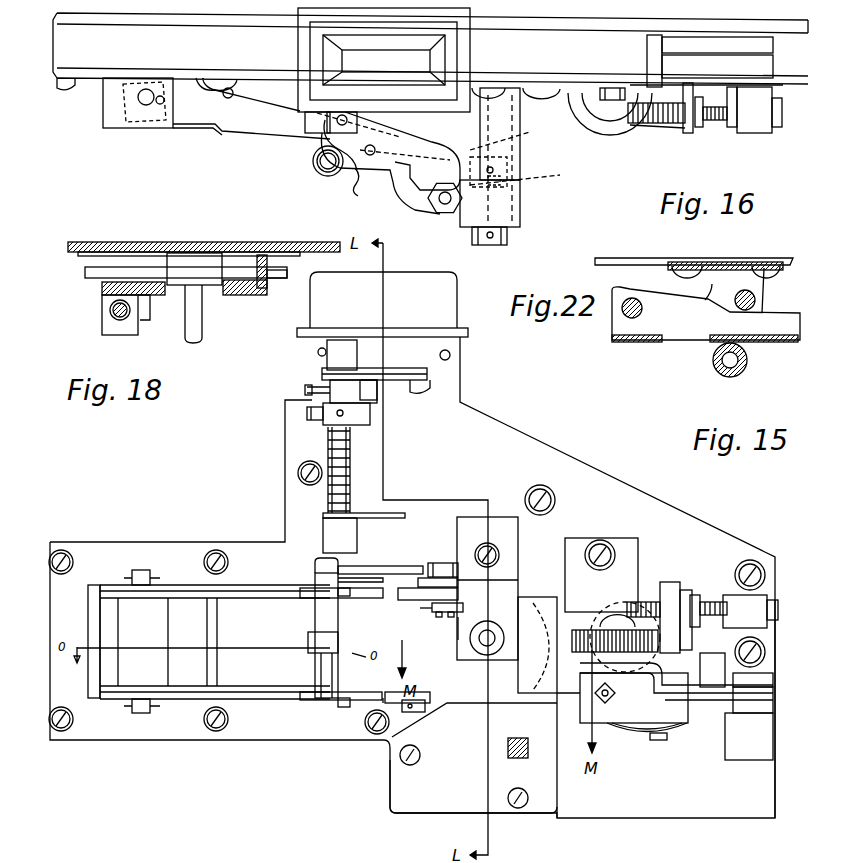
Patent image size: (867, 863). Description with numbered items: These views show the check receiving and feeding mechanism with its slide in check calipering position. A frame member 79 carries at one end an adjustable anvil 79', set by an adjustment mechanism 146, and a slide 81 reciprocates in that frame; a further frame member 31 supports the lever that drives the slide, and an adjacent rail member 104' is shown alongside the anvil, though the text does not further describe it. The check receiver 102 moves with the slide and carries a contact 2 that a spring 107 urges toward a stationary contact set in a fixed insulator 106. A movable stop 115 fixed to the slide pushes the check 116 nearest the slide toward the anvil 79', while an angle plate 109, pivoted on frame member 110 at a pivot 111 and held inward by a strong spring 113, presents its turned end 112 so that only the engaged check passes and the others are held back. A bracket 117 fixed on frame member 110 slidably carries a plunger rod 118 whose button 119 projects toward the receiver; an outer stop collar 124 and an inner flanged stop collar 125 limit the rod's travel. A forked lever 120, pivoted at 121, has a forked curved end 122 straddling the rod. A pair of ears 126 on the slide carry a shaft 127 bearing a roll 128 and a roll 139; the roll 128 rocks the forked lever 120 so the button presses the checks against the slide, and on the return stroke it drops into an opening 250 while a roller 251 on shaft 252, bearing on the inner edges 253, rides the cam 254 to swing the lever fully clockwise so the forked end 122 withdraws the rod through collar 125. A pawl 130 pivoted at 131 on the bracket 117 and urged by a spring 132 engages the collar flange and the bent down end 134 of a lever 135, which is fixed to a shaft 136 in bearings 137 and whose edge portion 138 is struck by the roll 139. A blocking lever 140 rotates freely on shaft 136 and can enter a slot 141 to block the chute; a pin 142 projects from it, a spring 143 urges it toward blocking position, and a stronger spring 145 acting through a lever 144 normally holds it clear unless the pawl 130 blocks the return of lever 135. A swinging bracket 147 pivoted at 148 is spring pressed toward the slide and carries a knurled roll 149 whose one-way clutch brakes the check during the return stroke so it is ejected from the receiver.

In FIG. 16, the frame member 31 is at (195, 24).
In FIG. 16, the frame member 110 is at (143, 69).
In FIG. 18, the frame member 110 is at (88, 271).
In FIG. 22, the frame member 110 is at (262, 740).
In FIG. 16, the rail member 104' is at (710, 61).
In FIG. 16, the adjustable anvil 79' is at (721, 74).
In FIG. 22, the adjustable anvil 79' is at (686, 604).
In FIG. 16, the pivot 121 is at (138, 103).
In FIG. 22, the pivot 121 is at (135, 713).
In FIG. 16, the opening 250 is at (200, 130).
In FIG. 15, the opening 250 is at (690, 341).
In FIG. 22, the opening 250 is at (203, 642).
In FIG. 16, the forked lever 120 is at (256, 134).
In FIG. 22, the forked lever 120 is at (258, 648).
In FIG. 16, the inner edges 253 is at (247, 95).
In FIG. 16, the cam 254 is at (229, 99).
In FIG. 15, the cam 254 is at (727, 284).
In FIG. 16, the blocking lever 140 is at (405, 118).
In FIG. 22, the blocking lever 140 is at (430, 387).
In FIG. 16, the lever 144 is at (372, 118).
In FIG. 22, the lever 144 is at (372, 418).
In FIG. 16, the roll 139 is at (313, 165).
In FIG. 22, the roll 139 is at (312, 562).
In FIG. 16, the ears 126 is at (313, 158).
In FIG. 22, the ears 126 is at (312, 588).
In FIG. 16, the bent down end 134 is at (410, 175).
In FIG. 16, the pawl 130 is at (412, 200).
In FIG. 16, the edge portion 138 is at (352, 173).
In FIG. 22, the edge portion 138 is at (365, 565).
In FIG. 16, the lever 135 is at (358, 188).
In FIG. 22, the lever 135 is at (408, 565).
In FIG. 16, the pivot 131 is at (437, 215).
In FIG. 22, the pivot 131 is at (458, 636).
In FIG. 16, the bracket 117 is at (520, 200).
In FIG. 16, the forked curved end 122 is at (518, 146).
In FIG. 16, the inner flanged stop collar 125 is at (510, 168).
In FIG. 16, the outer stop collar 124 is at (507, 240).
In FIG. 22, the outer stop collar 124 is at (500, 622).
In FIG. 16, the plunger rod 118 is at (490, 246).
In FIG. 18, the plunger rod 118 is at (203, 318).
In FIG. 22, the plunger rod 118 is at (468, 660).
In FIG. 16, the knurled roll 149 is at (610, 136).
In FIG. 22, the knurled roll 149 is at (615, 670).
In FIG. 16, the adjustment mechanism 146 is at (752, 133).
In FIG. 22, the adjustment mechanism 146 is at (772, 605).
In FIG. 18, the movable stop 115 is at (68, 252).
In FIG. 18, the slide 81 is at (245, 246).
In FIG. 18, the button 119 is at (203, 283).
In FIG. 18, the turned end 112 is at (268, 268).
In FIG. 22, the turned end 112 is at (550, 628).
In FIG. 18, the angle plate 109 is at (235, 296).
In FIG. 22, the angle plate 109 is at (500, 647).
In FIG. 18, the pivot 111 is at (102, 313).
In FIG. 22, the pivot 111 is at (418, 713).
In FIG. 18, the spring 113 is at (146, 306).
In FIG. 15, the roller 251 is at (768, 291).
In FIG. 15, the shaft 252 is at (757, 300).
In FIG. 22, the shaft 252 is at (345, 580).
In FIG. 15, the shaft 127 is at (718, 369).
In FIG. 22, the shaft 127 is at (336, 674).
In FIG. 15, the roll 128 is at (748, 371).
In FIG. 22, the roll 128 is at (340, 645).
In FIG. 22, the bearings 137 is at (358, 352).
In FIG. 22, the slot 141 is at (425, 376).
In FIG. 22, the spring 143 is at (305, 388).
In FIG. 22, the pin 142 is at (380, 404).
In FIG. 22, the shaft 136 is at (352, 465).
In FIG. 22, the spring 145 is at (352, 492).
In FIG. 22, the spring 132 is at (432, 608).
In FIG. 22, the check 116 is at (620, 600).
In FIG. 22, the check receiver 102 is at (660, 716).
In FIG. 22, the pivot 148 is at (775, 678).
In FIG. 22, the swinging bracket 147 is at (775, 692).
In FIG. 22, the spring 107 is at (612, 731).
In FIG. 22, the contact 2 is at (660, 741).
In FIG. 22, the frame member 79 is at (789, 709).
In FIG. 22, the fixed insulator 106 is at (465, 814).